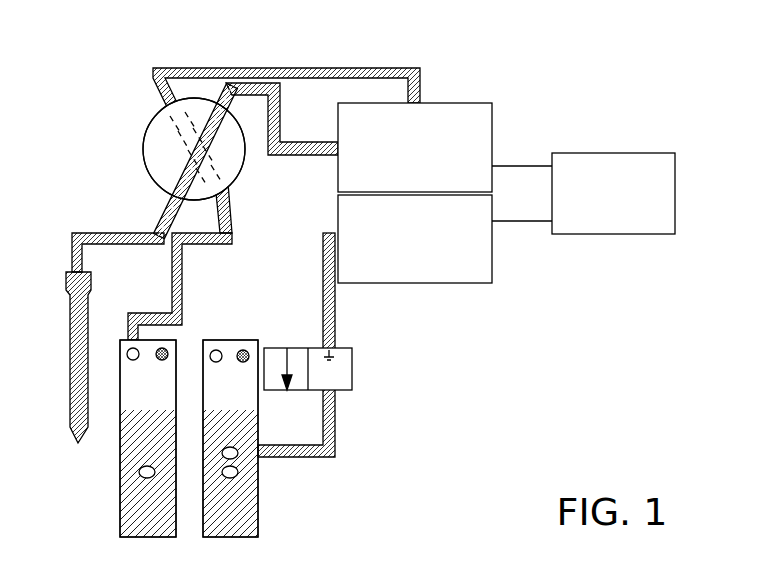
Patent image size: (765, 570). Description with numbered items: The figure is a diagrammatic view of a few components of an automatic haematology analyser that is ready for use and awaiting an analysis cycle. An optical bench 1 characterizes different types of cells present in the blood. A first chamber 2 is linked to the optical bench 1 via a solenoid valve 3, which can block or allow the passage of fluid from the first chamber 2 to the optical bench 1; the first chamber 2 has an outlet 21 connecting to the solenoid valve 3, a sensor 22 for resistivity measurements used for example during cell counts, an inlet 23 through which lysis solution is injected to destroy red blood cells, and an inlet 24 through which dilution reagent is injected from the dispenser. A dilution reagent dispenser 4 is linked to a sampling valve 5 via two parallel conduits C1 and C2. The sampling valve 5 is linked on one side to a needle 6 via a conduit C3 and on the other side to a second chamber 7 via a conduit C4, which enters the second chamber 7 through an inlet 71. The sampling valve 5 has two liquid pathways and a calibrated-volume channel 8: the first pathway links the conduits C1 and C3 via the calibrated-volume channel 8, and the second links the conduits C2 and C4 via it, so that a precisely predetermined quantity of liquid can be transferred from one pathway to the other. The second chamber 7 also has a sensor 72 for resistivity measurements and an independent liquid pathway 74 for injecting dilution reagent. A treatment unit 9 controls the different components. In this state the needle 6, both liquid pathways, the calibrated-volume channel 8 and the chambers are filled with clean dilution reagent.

The optical bench 1 is at (492, 268).
The first chamber 2 is at (281, 420).
The solenoid valve 3 is at (352, 372).
The dilution reagent dispenser 4 is at (492, 122).
The sampling valve 5 is at (150, 160).
The needle 6 is at (68, 330).
The second chamber 7 is at (96, 449).
The calibrated-volume channel 8 is at (147, 128).
The treatment unit 9 is at (657, 153).
The outlet 21 is at (238, 452).
The sensor 22 is at (238, 472).
The inlet 23 is at (244, 349).
The inlet 24 is at (214, 349).
The inlet 71 is at (127, 356).
The sensor 72 is at (99, 460).
The independent liquid pathway 74 is at (156, 360).
The conduit C1 is at (303, 153).
The conduit C2 is at (417, 68).
The conduit C3 is at (99, 232).
The conduit C4 is at (233, 240).